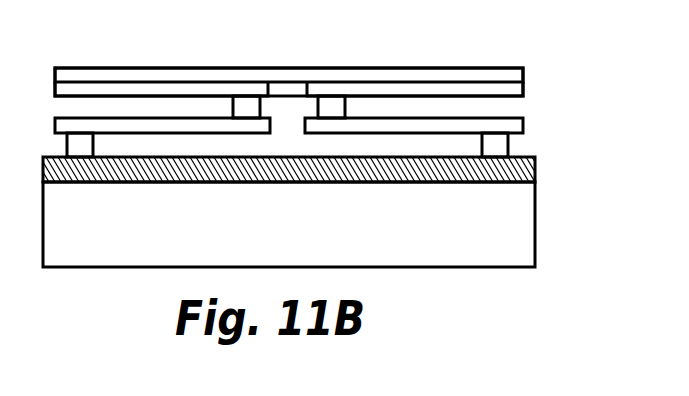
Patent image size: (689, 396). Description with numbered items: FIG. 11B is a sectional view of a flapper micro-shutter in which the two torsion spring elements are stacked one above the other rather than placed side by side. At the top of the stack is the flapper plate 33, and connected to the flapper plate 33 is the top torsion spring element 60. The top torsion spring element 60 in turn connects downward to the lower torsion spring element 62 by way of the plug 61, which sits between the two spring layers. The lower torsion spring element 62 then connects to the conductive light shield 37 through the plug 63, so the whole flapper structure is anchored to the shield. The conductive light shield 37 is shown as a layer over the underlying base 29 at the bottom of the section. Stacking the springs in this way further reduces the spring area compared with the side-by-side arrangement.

The substrate 29 is at (512, 252).
The conductive light shield 37 is at (540, 164).
The flapper plate 33 is at (512, 74).
The top torsion spring element 60 is at (142, 90).
The plug 61 is at (335, 112).
The lower torsion spring element 62 is at (173, 128).
The plug 63 is at (78, 145).